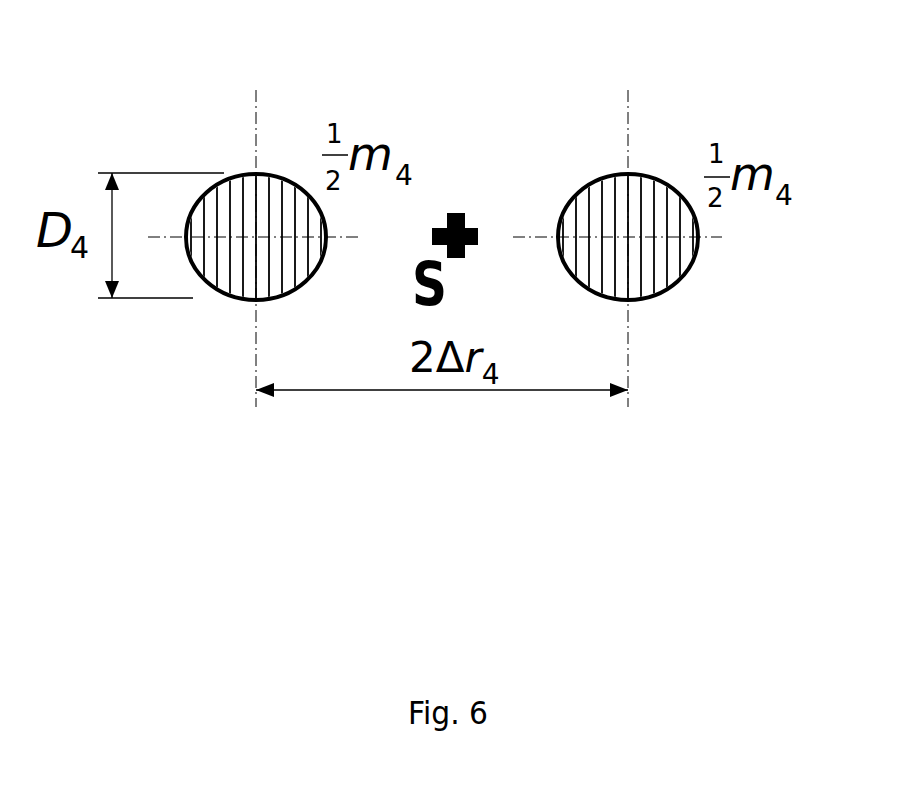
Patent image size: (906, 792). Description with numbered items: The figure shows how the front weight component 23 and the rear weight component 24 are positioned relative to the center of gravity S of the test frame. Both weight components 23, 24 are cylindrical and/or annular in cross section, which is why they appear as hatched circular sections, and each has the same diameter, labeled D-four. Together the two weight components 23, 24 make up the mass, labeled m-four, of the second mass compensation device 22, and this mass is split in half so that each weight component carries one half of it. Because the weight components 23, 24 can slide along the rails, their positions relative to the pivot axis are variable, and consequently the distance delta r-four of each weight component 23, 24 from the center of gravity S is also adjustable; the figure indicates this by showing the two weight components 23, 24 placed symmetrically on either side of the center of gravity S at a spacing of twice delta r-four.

The second mass compensation device 22 is at (420, 162).
The front weight component 23 is at (227, 217).
The rear weight component 24 is at (613, 230).